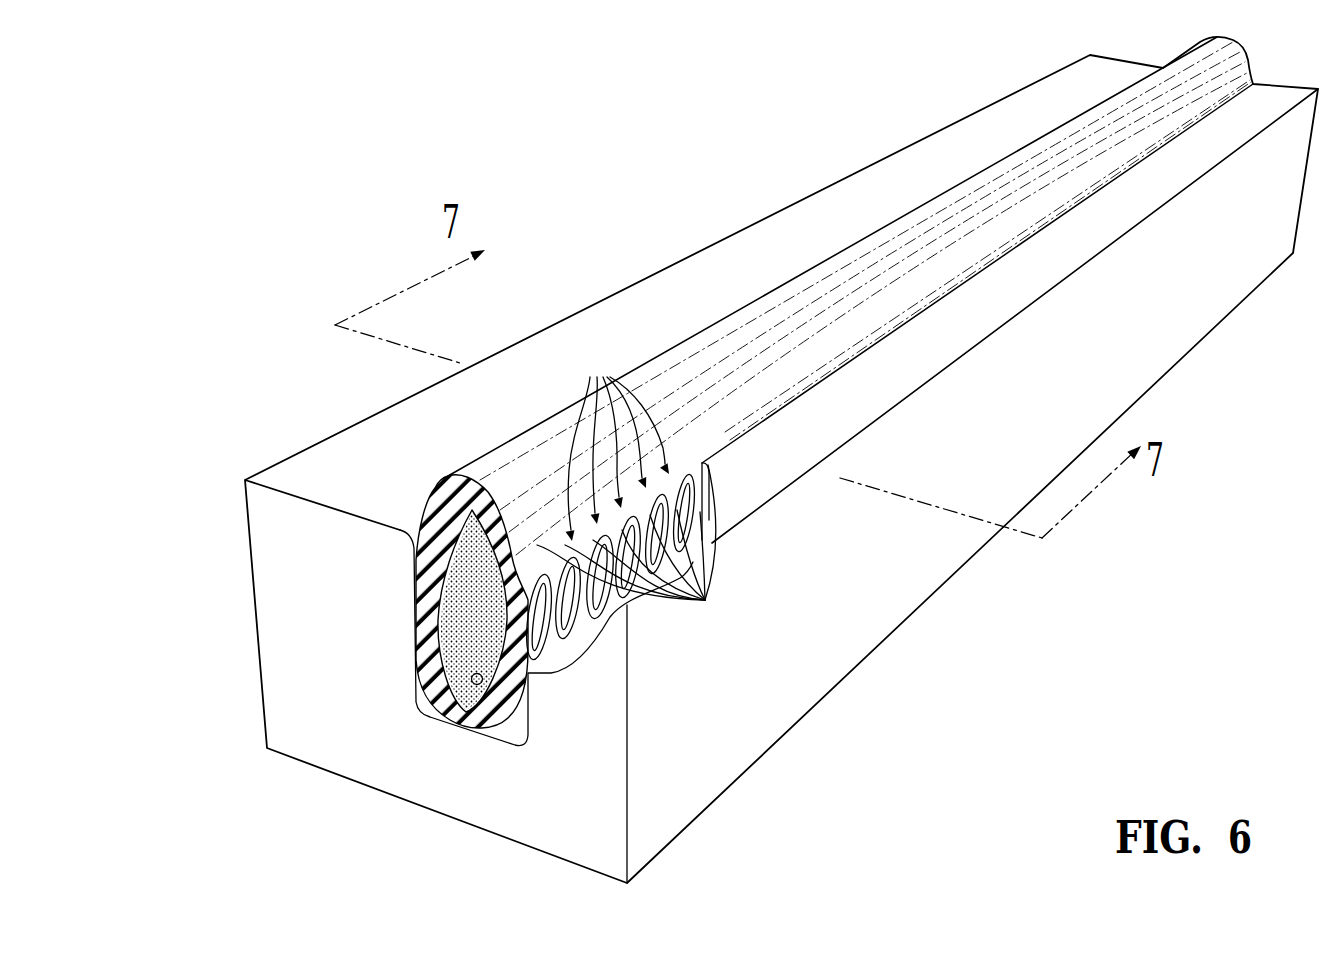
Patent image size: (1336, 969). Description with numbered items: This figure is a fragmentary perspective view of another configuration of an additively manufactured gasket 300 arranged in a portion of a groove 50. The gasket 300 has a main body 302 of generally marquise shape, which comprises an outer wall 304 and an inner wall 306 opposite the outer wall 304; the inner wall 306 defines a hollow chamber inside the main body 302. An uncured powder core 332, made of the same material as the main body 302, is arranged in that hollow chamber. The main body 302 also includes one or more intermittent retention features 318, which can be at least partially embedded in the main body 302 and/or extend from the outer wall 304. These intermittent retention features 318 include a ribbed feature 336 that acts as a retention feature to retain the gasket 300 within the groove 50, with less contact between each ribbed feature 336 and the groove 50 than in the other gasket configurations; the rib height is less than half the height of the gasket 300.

The groove 50 is at (292, 643).
The additively manufactured gasket 300 is at (484, 430).
The main body 302 is at (723, 425).
The outer wall 304 is at (566, 582).
The inner wall 306 is at (483, 685).
The intermittent retention features 318 is at (617, 443).
The uncured powder core 332 is at (422, 550).
The ribbed feature 336 is at (632, 549).